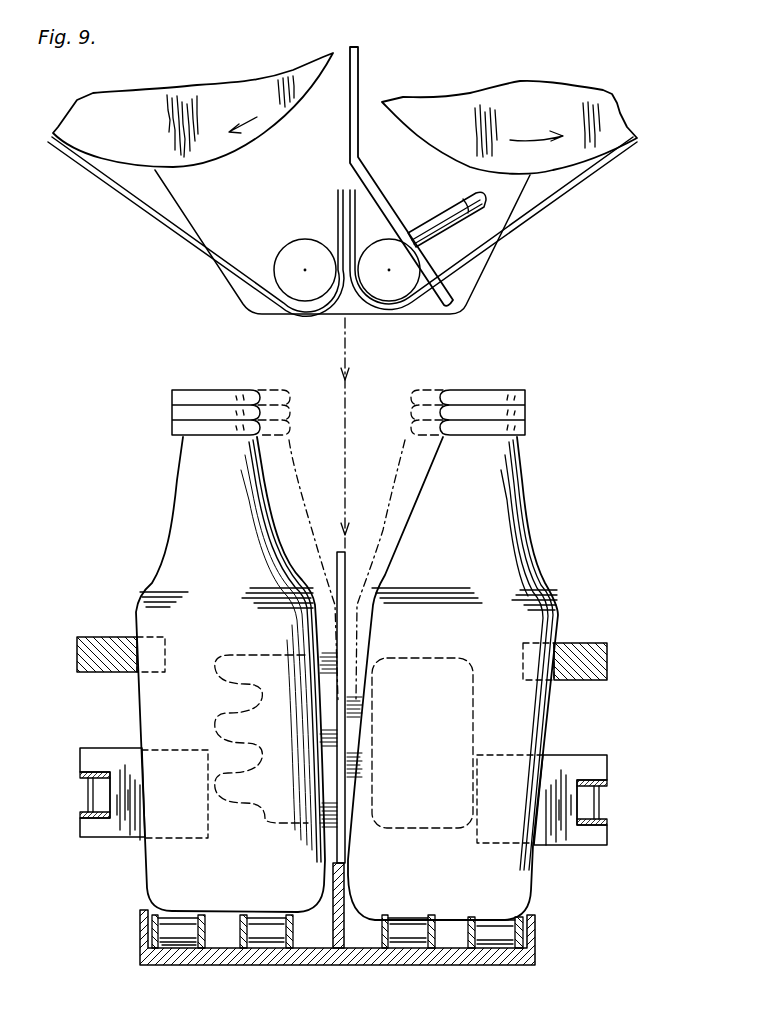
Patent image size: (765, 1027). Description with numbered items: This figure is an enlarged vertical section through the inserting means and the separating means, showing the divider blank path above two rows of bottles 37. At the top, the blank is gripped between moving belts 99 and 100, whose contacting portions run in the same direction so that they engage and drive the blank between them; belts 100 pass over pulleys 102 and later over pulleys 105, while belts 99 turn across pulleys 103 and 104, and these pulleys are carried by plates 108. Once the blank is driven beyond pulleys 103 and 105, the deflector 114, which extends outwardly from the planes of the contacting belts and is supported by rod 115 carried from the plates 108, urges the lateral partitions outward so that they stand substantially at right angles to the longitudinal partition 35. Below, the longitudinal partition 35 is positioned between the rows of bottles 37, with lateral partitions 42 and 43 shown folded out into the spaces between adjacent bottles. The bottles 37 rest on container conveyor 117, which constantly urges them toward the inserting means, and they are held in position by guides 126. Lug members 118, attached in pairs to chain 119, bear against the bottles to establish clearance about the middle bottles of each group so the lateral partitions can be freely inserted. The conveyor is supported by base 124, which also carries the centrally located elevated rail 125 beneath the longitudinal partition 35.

The longitudinal partition 35 is at (346, 565).
The bottles 37 is at (235, 523).
The lateral partition 42 is at (426, 672).
The lateral partition 43 is at (264, 658).
The moving belts 99 is at (540, 205).
The moving belts 100 is at (160, 212).
The pulleys 102 is at (162, 131).
The pulleys 103 is at (392, 288).
The pulleys 104 is at (492, 116).
The pulleys 105 is at (305, 288).
The plates 108 is at (288, 200).
The deflector 114 is at (443, 283).
The rod 115 is at (446, 212).
The container conveyor 117 is at (265, 930).
The lug members 118 is at (88, 762).
The chain 119 is at (95, 793).
The base 124 is at (500, 965).
The elevated rail 125 is at (346, 920).
The guides 126 is at (105, 672).